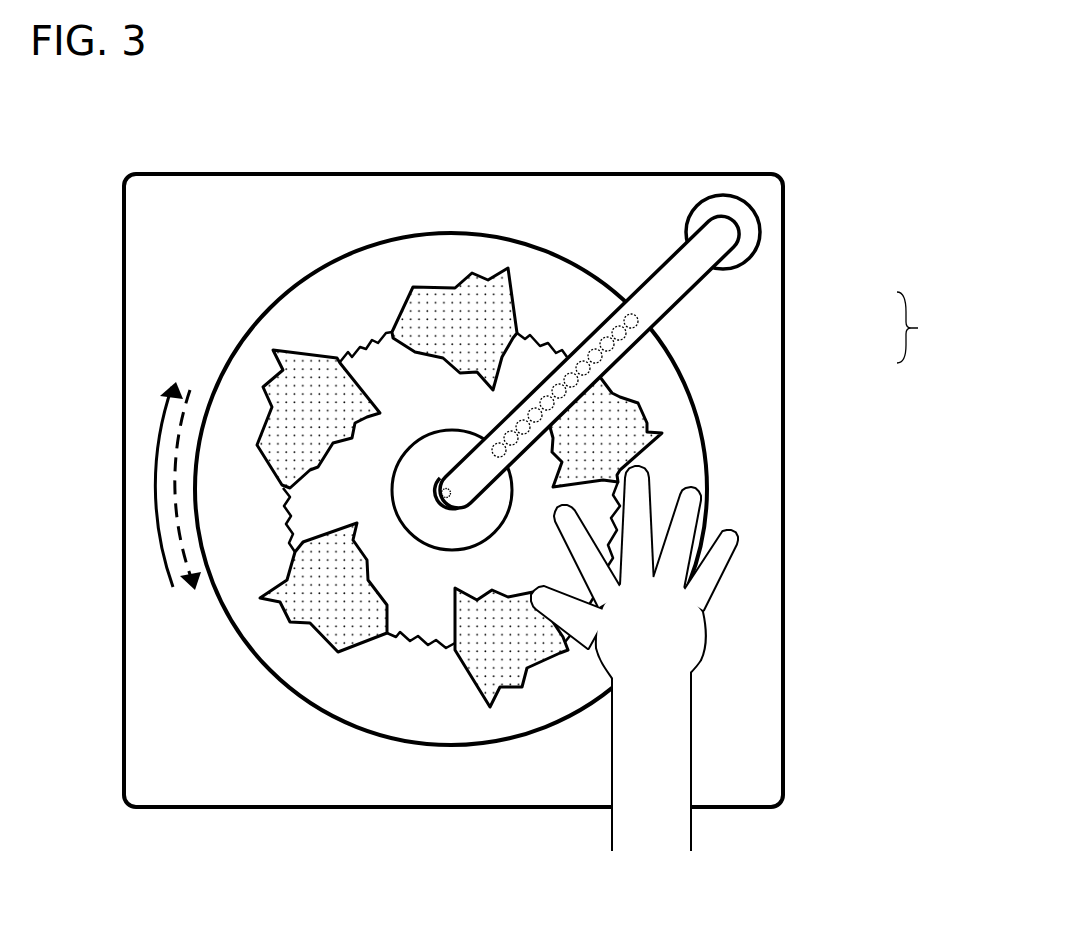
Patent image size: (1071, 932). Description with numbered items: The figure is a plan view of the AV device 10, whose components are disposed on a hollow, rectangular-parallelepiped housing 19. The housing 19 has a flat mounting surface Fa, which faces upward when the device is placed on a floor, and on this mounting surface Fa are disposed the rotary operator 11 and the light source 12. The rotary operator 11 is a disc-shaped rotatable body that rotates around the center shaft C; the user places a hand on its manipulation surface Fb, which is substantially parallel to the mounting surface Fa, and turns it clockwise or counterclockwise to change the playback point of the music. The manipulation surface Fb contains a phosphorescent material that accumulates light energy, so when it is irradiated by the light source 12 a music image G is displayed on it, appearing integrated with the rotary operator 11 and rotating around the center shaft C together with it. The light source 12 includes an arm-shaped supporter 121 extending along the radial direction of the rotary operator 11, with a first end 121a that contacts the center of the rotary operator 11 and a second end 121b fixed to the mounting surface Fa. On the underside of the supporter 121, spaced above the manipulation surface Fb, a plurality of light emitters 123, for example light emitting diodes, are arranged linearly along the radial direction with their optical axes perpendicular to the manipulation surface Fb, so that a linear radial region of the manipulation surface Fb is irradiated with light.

The AV device 10 is at (498, 501).
The rotary operator 11 is at (375, 489).
The light source 12 is at (694, 318).
The housing 19 is at (507, 490).
The supporter 121 is at (684, 300).
The first end 121a is at (460, 488).
The second end 121b is at (712, 238).
The light emitters 123 is at (662, 327).
The center shaft C is at (445, 493).
The music image G is at (650, 437).
The mounting surface Fa is at (747, 708).
The manipulation surface Fb is at (290, 657).